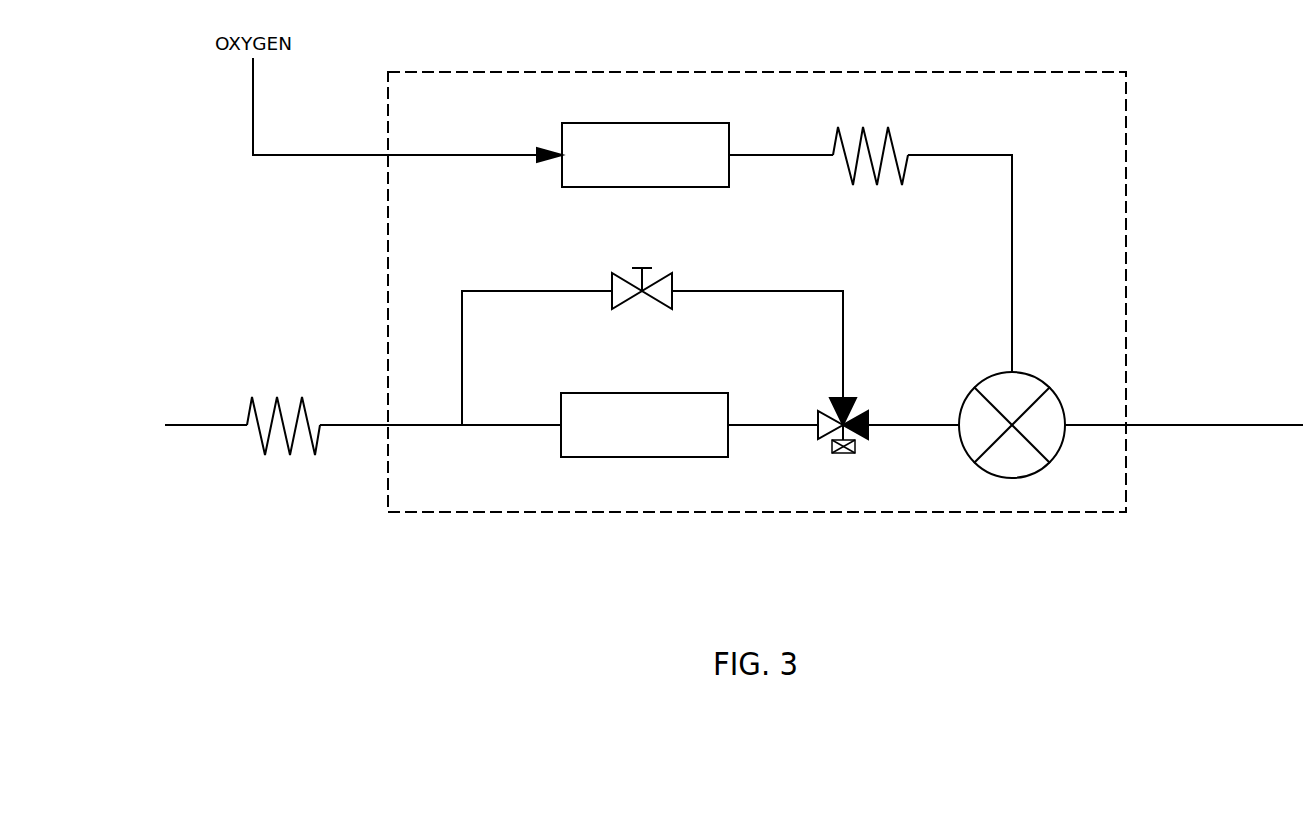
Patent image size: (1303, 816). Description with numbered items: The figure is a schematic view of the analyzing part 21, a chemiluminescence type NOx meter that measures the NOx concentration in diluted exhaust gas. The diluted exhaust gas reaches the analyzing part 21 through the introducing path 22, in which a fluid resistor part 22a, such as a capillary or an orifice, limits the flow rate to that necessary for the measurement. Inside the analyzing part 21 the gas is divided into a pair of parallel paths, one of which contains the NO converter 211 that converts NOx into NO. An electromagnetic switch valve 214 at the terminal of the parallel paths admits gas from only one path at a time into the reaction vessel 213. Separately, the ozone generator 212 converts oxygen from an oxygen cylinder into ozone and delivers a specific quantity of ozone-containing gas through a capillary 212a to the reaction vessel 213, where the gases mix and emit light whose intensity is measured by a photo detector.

The analyzing part 21 is at (1050, 72).
The introducing path 22 is at (342, 424).
The fluid resistor part 22a is at (277, 393).
The NO converter 211 is at (683, 393).
The ozone generator 212 is at (573, 187).
The capillary 212a is at (877, 185).
The reaction vessel 213 is at (1033, 372).
The electromagnetic switch valve 214 is at (868, 408).